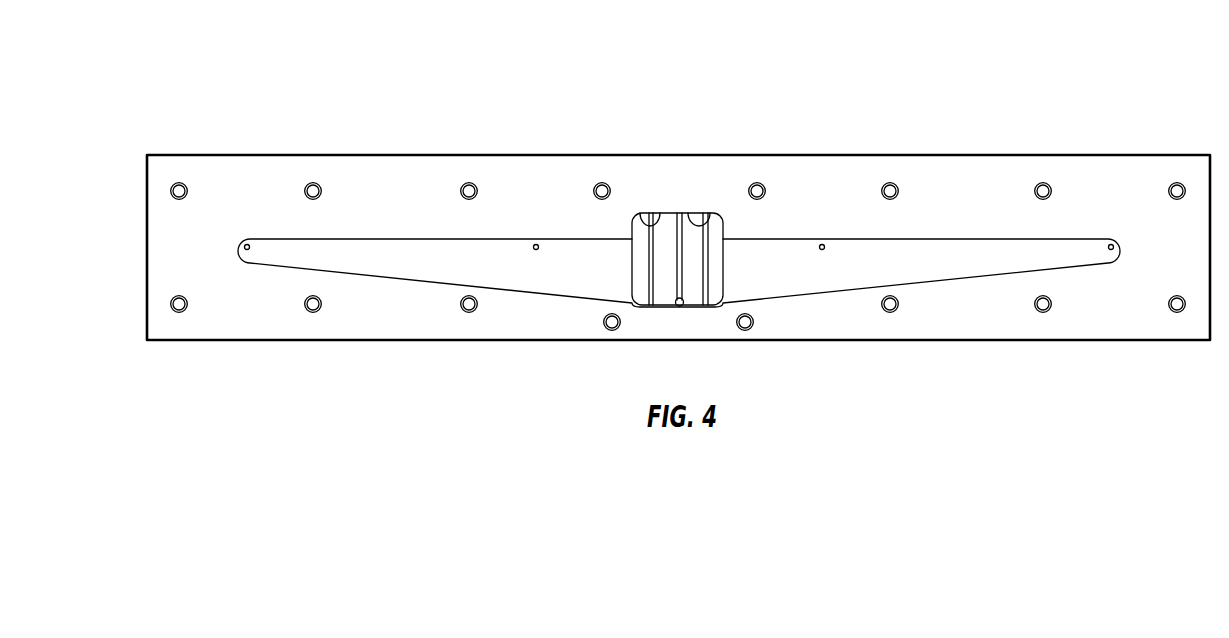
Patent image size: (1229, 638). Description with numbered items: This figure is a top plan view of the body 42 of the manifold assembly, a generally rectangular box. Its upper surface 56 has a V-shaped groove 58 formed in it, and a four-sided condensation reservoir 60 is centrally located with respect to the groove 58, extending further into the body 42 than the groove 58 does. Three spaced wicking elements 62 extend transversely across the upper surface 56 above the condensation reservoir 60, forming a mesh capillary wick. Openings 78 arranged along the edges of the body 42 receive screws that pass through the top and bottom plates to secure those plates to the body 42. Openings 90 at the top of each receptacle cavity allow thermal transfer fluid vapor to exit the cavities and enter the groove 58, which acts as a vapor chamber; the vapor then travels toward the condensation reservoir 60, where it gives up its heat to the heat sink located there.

The body 42 is at (962, 110).
The upper surface 56 is at (675, 172).
The V-shaped groove 58 is at (383, 272).
The condensation reservoir 60 is at (713, 213).
The wicking elements 62 is at (636, 215).
The openings 78 is at (311, 182).
The openings 90 is at (247, 244).